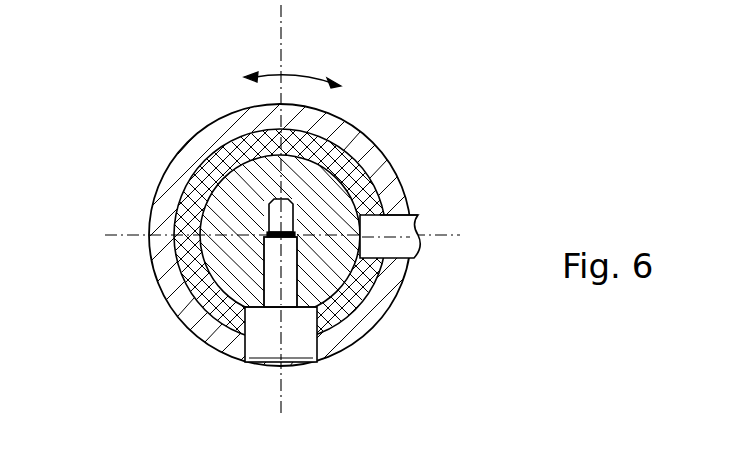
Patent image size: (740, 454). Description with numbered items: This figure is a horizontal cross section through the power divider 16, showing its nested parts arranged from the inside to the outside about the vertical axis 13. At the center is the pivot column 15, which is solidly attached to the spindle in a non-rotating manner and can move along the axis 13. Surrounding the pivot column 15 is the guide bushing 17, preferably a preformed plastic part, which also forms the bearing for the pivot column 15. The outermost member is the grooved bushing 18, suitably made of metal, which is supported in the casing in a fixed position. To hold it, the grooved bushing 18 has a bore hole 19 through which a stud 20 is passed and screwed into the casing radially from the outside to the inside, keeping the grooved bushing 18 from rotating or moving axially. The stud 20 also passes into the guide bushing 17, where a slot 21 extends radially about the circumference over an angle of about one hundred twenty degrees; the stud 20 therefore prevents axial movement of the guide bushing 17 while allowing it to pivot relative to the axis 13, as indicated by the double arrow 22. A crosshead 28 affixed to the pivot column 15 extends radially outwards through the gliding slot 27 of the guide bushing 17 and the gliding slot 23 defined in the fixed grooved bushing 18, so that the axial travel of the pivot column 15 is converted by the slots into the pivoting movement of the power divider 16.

The vertical axis 13 is at (268, 237).
The pivot column 15 is at (232, 190).
The power divider 16 is at (143, 127).
The guide bushing 17 is at (342, 305).
The grooved bushing 18 is at (372, 158).
The bore hole 19 is at (412, 216).
The stud 20 is at (401, 228).
The slot 21 is at (343, 167).
The double arrow 22 is at (316, 76).
The gliding slot 23 is at (245, 345).
The gliding slot 27 is at (245, 312).
The crosshead 28 is at (258, 347).